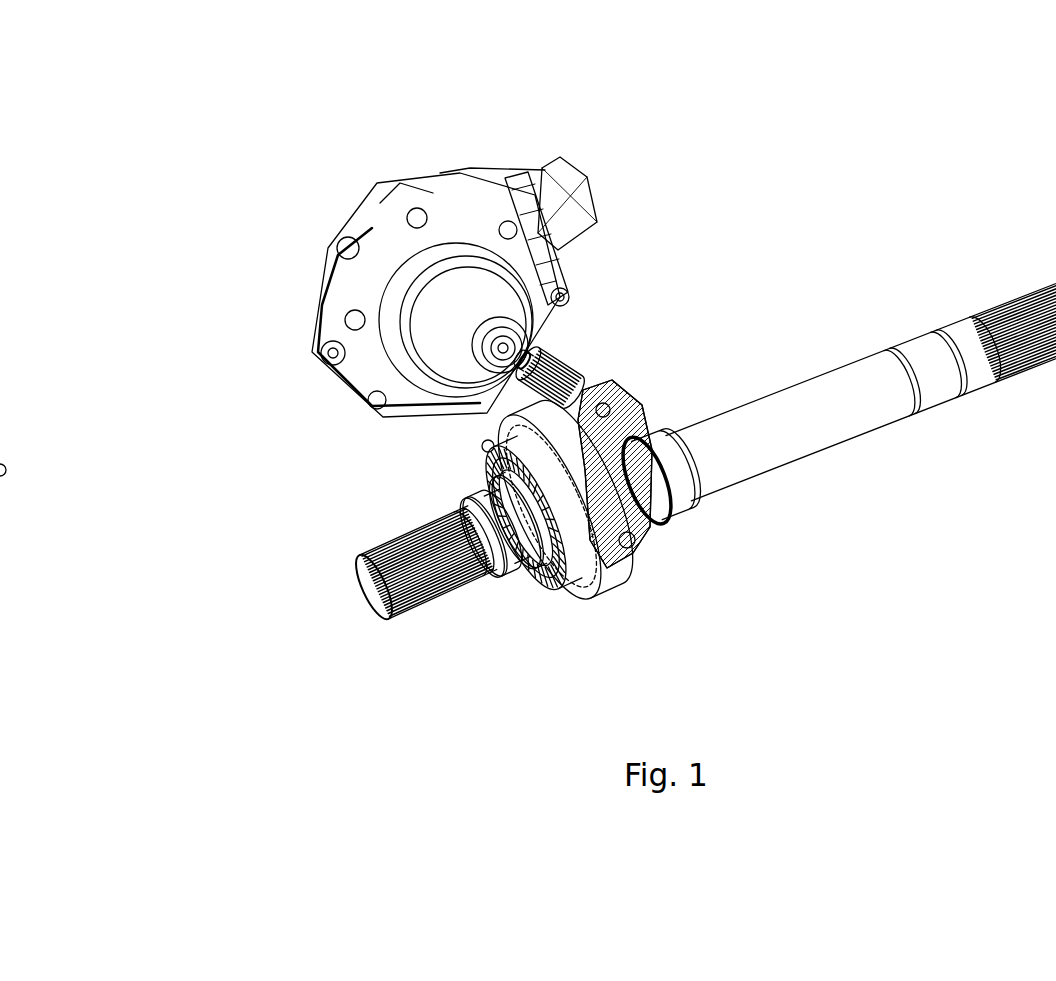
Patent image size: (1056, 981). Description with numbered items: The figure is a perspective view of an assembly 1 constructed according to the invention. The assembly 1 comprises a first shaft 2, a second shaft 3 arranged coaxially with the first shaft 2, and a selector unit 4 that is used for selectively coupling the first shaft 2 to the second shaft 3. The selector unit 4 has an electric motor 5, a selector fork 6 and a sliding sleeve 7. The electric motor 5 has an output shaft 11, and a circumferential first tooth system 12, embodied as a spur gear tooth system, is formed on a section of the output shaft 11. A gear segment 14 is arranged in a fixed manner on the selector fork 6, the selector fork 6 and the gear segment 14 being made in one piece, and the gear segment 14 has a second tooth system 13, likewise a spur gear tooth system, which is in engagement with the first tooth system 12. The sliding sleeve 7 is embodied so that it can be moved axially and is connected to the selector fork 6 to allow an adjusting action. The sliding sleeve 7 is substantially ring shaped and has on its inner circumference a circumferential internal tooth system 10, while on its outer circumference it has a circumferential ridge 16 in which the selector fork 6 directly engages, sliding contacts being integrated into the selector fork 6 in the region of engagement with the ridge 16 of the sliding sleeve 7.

The assembly 1 is at (195, 48).
The first shaft 2 is at (798, 420).
The second shaft 3 is at (502, 568).
The selector unit 4 is at (632, 196).
The electric motor 5 is at (377, 222).
The selector fork 6 is at (627, 443).
The sliding sleeve 7 is at (570, 497).
The internal tooth system 10 is at (555, 570).
The output shaft 11 is at (533, 348).
The first tooth system 12 is at (577, 380).
The second tooth system 13 is at (620, 397).
The gear segment 14 is at (620, 397).
The ridge 16 is at (481, 446).